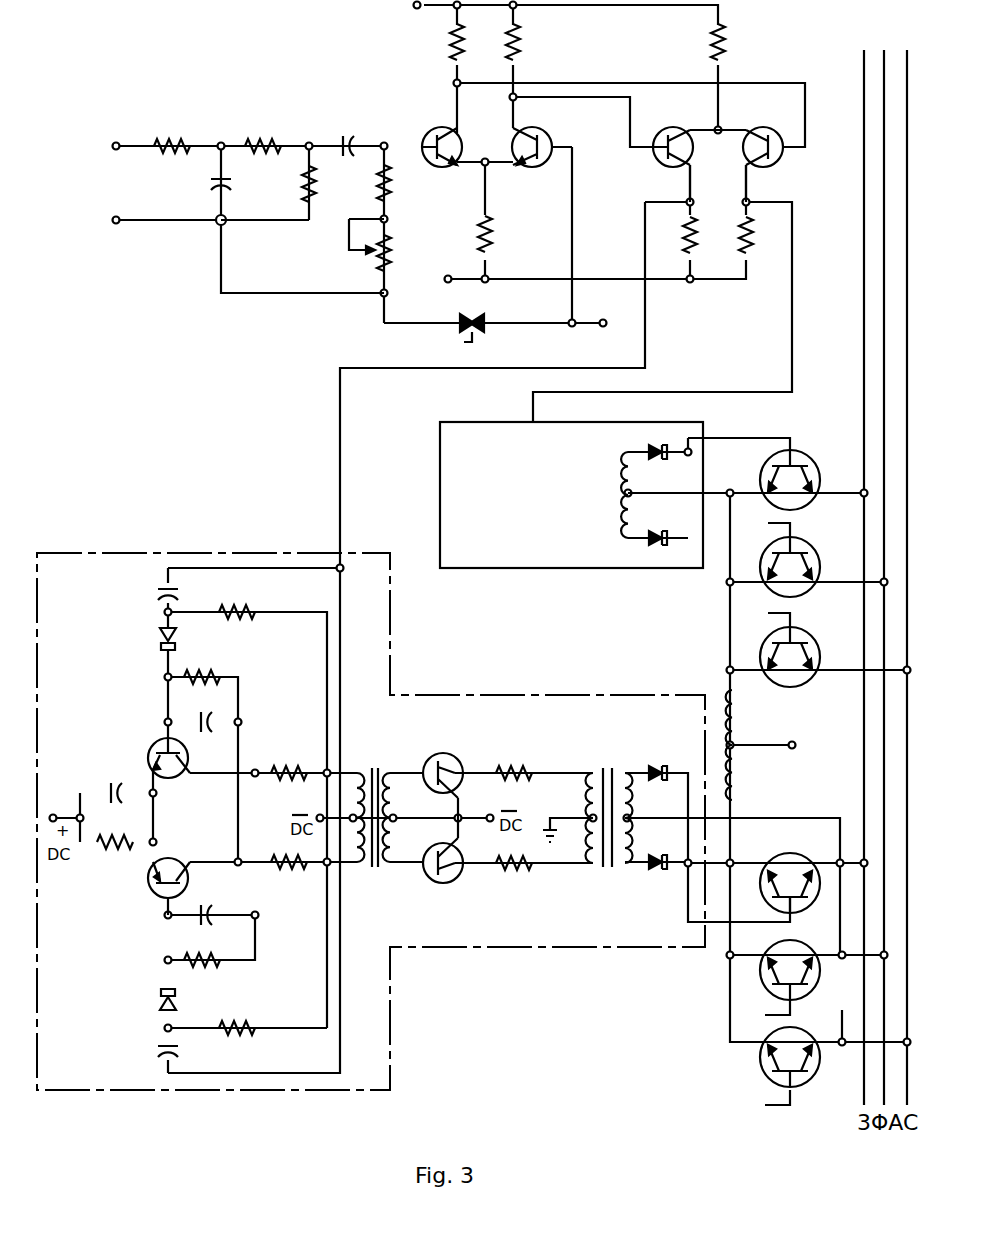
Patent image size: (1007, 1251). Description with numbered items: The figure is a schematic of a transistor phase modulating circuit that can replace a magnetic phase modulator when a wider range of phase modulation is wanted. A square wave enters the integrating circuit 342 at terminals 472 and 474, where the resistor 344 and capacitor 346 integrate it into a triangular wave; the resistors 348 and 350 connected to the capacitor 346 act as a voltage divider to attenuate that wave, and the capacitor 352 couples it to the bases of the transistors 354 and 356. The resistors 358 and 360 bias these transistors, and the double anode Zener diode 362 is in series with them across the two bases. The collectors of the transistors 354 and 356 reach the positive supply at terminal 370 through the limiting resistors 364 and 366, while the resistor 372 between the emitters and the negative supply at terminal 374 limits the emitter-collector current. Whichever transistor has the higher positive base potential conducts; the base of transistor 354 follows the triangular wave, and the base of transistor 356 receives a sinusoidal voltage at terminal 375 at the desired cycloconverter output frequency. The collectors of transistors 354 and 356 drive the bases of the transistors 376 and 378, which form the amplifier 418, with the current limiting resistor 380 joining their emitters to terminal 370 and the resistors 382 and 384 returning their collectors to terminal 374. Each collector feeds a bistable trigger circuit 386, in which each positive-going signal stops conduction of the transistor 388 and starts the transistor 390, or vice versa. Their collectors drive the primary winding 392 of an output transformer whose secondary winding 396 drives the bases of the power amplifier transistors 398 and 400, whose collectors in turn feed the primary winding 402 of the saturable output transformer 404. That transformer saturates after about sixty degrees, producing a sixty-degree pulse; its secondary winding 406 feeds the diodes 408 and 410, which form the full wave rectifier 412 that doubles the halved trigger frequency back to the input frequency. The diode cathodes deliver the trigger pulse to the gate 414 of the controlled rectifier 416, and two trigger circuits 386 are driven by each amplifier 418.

The integrating circuit 342 is at (218, 257).
The resistor 344 is at (162, 142).
The capacitor 346 is at (236, 190).
The resistor 348 is at (258, 142).
The resistor 350 is at (318, 190).
The capacitor 352 is at (347, 136).
The transistor 354 is at (430, 136).
The transistor 356 is at (534, 134).
The resistor 358 is at (396, 190).
The resistor 360 is at (392, 250).
The double anode Zener diode 362 is at (480, 316).
The limiting resistor 364 is at (449, 47).
The limiting resistor 366 is at (520, 50).
The positive direct current terminal 370 is at (411, 5).
The resistor 372 is at (494, 240).
The negative direct current terminal 374 is at (444, 279).
The terminal 375 is at (604, 321).
The transistor 376 is at (775, 168).
The transistor 378 is at (663, 168).
The current limiting resistor 380 is at (712, 47).
The resistor 382 is at (756, 244).
The resistor 384 is at (698, 244).
The bistable trigger circuit 386 is at (440, 512).
The transistor 388 is at (153, 751).
The transistor 390 is at (152, 890).
The primary winding 392 is at (345, 798).
The secondary winding 396 is at (392, 795).
The transistor 398 is at (388, 770).
The transistor 400 is at (428, 890).
The primary winding 402 is at (585, 805).
The saturable output transformer 404 is at (618, 475).
The secondary winding 406 is at (620, 510).
The diode 408 is at (652, 462).
The diode 410 is at (652, 530).
The full wave rectifier 412 is at (678, 843).
The gate 414 is at (808, 900).
The controlled rectifier 416 is at (770, 858).
The amplifier 418 is at (748, 215).
The terminal 472 is at (116, 142).
The terminal 474 is at (114, 216).